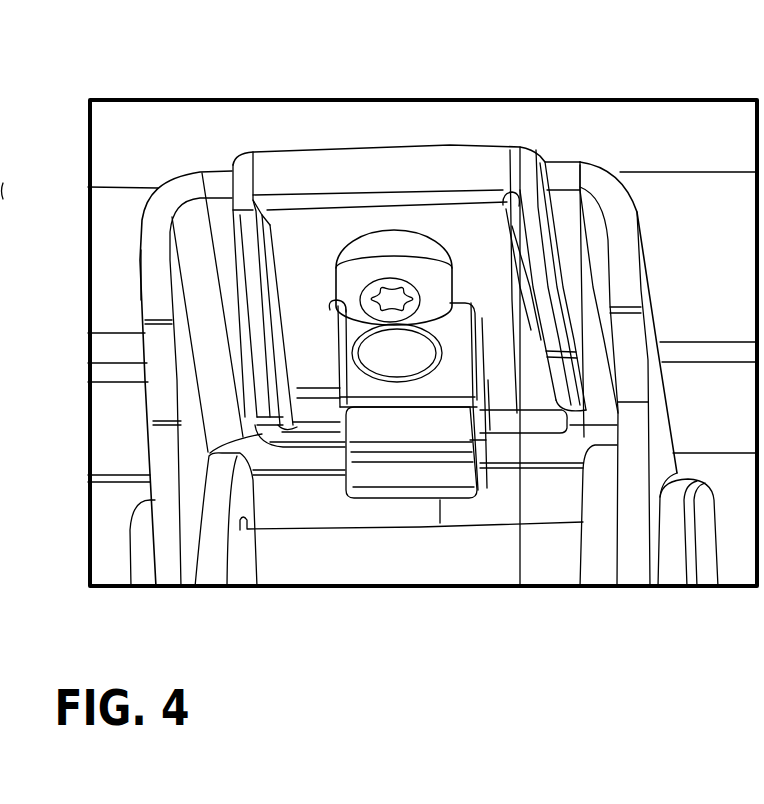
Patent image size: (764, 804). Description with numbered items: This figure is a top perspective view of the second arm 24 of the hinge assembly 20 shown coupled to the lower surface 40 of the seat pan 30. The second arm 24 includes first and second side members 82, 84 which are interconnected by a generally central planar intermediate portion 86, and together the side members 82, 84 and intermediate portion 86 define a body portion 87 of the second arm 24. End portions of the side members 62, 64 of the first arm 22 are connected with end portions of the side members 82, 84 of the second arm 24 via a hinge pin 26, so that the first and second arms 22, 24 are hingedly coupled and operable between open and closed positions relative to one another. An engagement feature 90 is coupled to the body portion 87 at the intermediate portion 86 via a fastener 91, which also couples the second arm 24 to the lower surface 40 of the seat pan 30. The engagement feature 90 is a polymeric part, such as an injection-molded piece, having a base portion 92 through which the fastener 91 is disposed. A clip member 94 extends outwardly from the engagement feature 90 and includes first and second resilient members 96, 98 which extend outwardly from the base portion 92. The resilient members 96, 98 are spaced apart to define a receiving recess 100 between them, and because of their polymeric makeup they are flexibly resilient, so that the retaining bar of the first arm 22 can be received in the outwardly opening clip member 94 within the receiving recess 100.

The hinge assembly 20 is at (138, 436).
The first arm 22 is at (213, 537).
The second arm 24 is at (646, 222).
The hinge pin 26 is at (308, 550).
The seat pan 30 is at (206, 128).
The lower surface 40 is at (374, 118).
The first side member 62 is at (215, 573).
The second side member 64 is at (592, 552).
The first side member 82 is at (88, 334).
The second side member 84 is at (655, 333).
The intermediate portion 86 is at (185, 220).
The body portion 87 is at (168, 170).
The engagement feature 90 is at (266, 142).
The fastener 91 is at (420, 275).
The base portion 92 is at (333, 170).
The clip member 94 is at (489, 313).
The first resilient member 96 is at (522, 590).
The second resilient member 98 is at (443, 523).
The receiving recess 100 is at (408, 420).